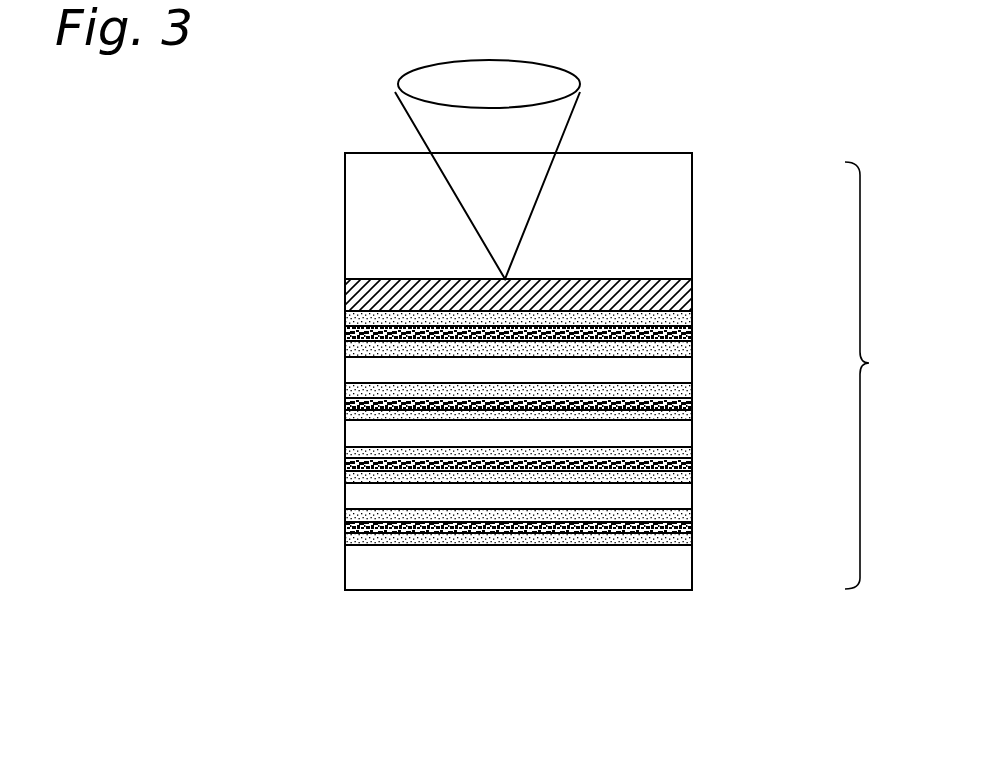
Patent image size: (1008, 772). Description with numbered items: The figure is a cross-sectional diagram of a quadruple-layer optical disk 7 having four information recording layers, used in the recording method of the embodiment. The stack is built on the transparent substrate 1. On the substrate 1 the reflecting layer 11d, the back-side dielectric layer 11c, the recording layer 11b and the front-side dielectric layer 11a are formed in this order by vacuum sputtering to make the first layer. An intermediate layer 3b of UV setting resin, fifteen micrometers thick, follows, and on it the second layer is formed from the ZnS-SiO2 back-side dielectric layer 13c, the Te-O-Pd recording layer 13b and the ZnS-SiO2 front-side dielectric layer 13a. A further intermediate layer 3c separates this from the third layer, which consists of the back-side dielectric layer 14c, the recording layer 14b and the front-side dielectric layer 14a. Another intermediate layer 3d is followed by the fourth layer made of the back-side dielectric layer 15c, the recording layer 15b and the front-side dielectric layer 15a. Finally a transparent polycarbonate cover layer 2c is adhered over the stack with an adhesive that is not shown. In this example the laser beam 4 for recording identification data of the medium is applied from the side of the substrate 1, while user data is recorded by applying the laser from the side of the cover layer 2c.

The substrate 1 is at (518, 216).
The cover layer 2c is at (518, 567).
The intermediate layer 3b is at (520, 375).
The intermediate layer 3c is at (432, 430).
The intermediate layer 3d is at (580, 493).
The laser beam 4 is at (547, 118).
The optical disk 7 is at (876, 375).
The front-side dielectric layer 11a is at (686, 356).
The recording layer 11b is at (692, 335).
The back-side dielectric layer 11c is at (692, 320).
The reflecting layer 11d is at (692, 290).
The front-side dielectric layer of second layer 13a is at (345, 413).
The recording layer of second layer 13b is at (345, 401).
The back-side dielectric layer of second layer 13c is at (345, 391).
The front-side dielectric layer of third layer 14a is at (692, 480).
The recording layer of third layer 14b is at (692, 468).
The back-side dielectric layer of third layer 14c is at (692, 451).
The front-side dielectric layer of fourth layer 15a is at (345, 539).
The recording layer of fourth layer 15b is at (345, 527).
The back-side dielectric layer of fourth layer 15c is at (345, 516).